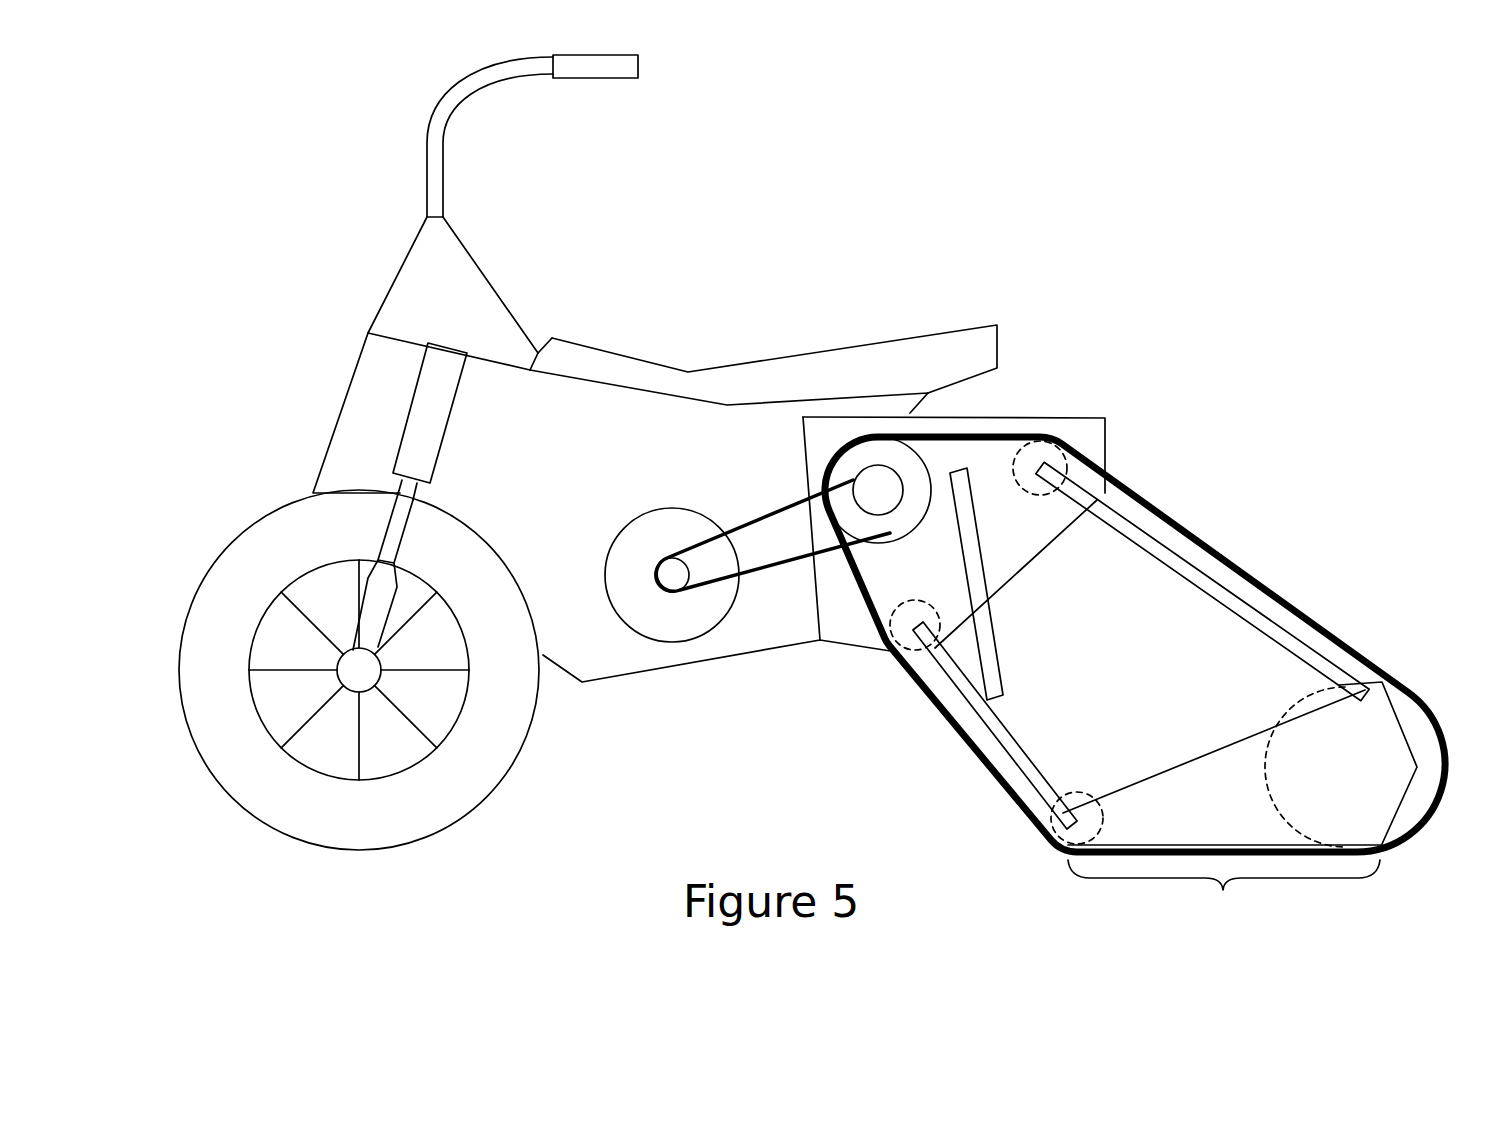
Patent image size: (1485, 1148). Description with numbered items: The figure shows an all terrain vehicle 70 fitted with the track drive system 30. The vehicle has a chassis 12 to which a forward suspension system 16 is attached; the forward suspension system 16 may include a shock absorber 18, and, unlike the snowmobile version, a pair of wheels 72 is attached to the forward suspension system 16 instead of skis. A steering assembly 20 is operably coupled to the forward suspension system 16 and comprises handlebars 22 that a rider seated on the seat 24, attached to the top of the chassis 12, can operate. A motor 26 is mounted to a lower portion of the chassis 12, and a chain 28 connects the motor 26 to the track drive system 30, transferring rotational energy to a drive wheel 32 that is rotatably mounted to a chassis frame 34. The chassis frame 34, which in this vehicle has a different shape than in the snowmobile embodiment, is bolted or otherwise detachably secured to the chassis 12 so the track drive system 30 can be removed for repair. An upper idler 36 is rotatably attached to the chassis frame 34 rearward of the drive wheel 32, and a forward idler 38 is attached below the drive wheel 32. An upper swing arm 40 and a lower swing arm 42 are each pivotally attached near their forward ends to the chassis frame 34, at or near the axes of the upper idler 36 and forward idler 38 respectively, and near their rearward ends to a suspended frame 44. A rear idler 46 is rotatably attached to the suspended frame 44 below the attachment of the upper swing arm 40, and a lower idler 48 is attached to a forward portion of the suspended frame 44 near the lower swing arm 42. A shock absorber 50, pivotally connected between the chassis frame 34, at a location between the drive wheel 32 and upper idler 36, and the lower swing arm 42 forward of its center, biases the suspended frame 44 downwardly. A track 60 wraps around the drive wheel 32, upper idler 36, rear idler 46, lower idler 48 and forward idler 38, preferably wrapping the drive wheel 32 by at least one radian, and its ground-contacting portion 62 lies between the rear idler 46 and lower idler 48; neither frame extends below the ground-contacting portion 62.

The chassis 12 is at (613, 680).
The forward suspension system 16 is at (317, 377).
The shock absorber 18 is at (373, 487).
The steering assembly 20 is at (332, 245).
The handlebars 22 is at (533, 73).
The seat 24 is at (842, 345).
The motor 26 is at (623, 523).
The chain 28 is at (780, 503).
The track drive system 30 is at (1265, 530).
The drive wheel 32 is at (930, 460).
The chassis frame 34 is at (1053, 415).
The upper idler 36 is at (1038, 495).
The forward idler 38 is at (890, 610).
The upper swing arm 40 is at (1154, 537).
The lower swing arm 42 is at (1000, 742).
The suspended frame 44 is at (1179, 762).
The rear idler 46 is at (1268, 767).
The lower idler 48 is at (1102, 825).
The shock absorber 50 is at (993, 623).
The track 60 is at (1318, 626).
The ground-contacting portion 62 is at (1224, 892).
The all terrain vehicle 70 is at (1072, 168).
The wheels 72 is at (203, 572).